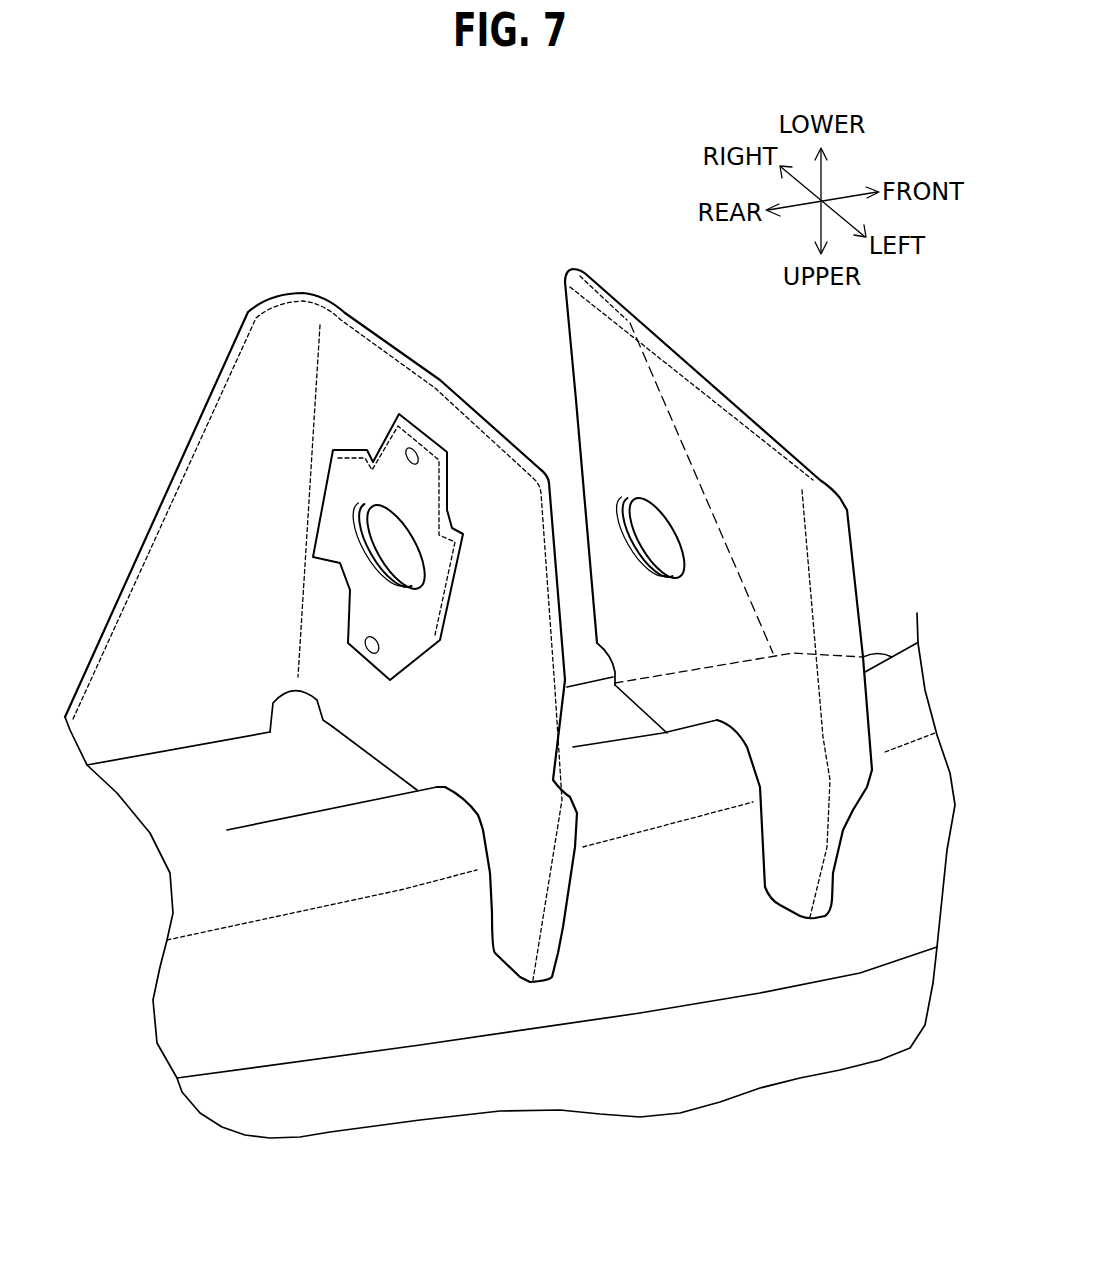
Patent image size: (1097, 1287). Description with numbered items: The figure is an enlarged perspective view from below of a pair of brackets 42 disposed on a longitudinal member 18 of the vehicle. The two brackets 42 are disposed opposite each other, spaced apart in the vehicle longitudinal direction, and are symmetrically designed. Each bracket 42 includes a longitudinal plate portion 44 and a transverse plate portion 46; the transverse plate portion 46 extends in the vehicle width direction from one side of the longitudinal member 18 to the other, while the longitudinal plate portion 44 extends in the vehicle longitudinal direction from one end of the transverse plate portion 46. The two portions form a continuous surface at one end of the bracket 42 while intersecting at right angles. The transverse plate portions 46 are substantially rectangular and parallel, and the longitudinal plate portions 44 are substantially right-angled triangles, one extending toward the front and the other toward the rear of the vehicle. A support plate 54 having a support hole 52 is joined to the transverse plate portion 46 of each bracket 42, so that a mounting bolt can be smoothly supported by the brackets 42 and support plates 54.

The longitudinal member 18 is at (428, 1088).
The bracket 42 is at (235, 288).
The longitudinal plate portion 44 is at (165, 498).
The transverse plate portion 46 is at (415, 740).
The support hole 52 is at (372, 562).
The support plate 54 is at (373, 610).